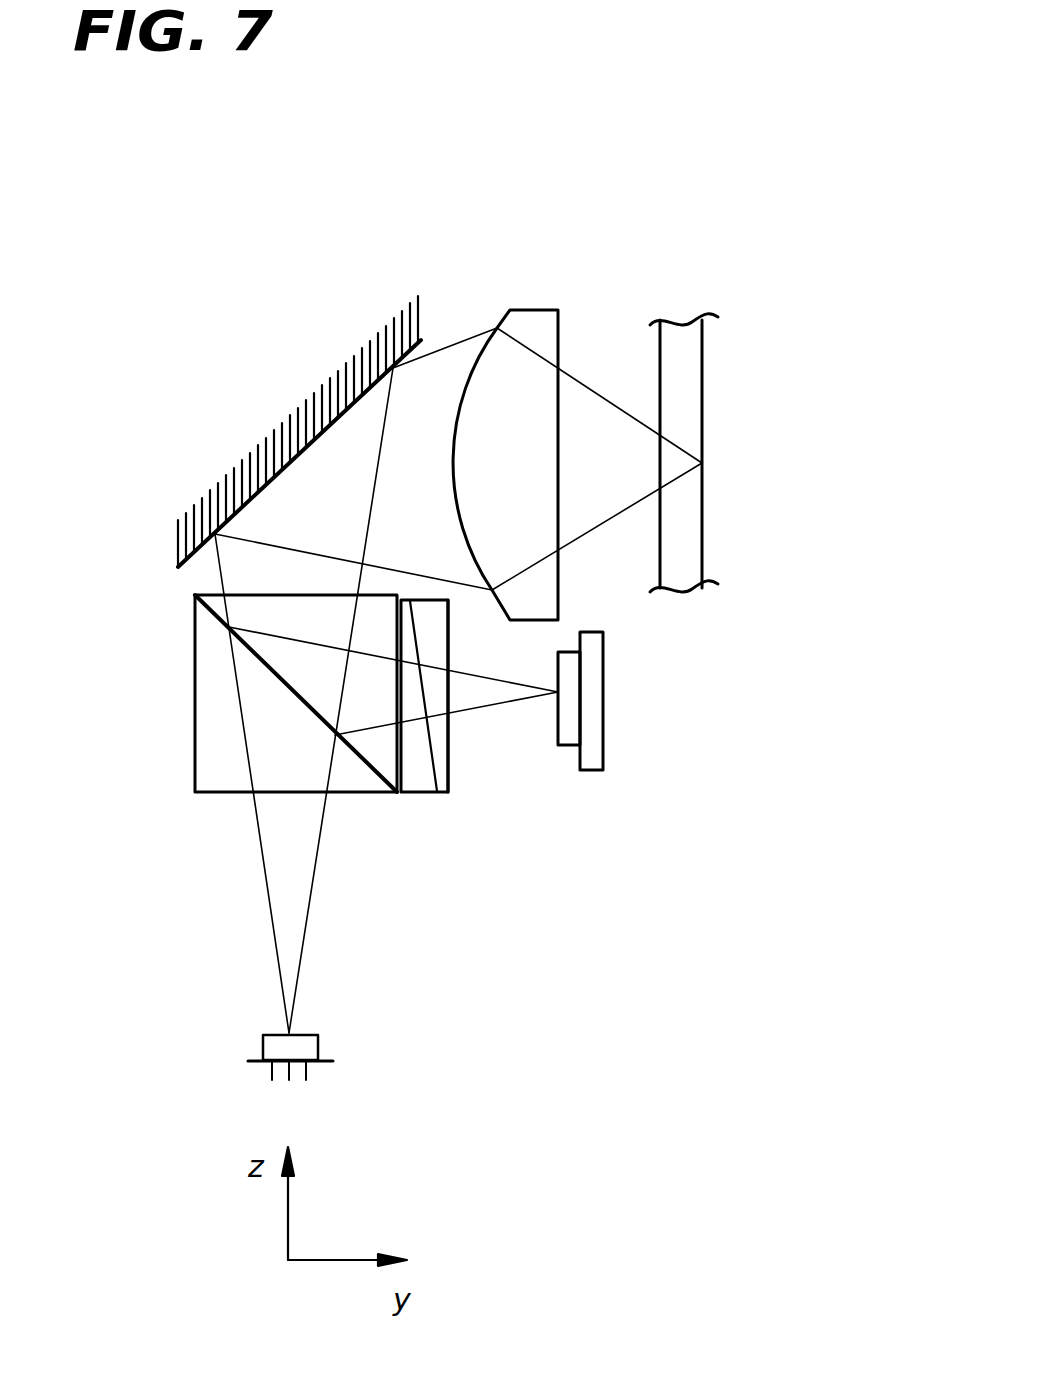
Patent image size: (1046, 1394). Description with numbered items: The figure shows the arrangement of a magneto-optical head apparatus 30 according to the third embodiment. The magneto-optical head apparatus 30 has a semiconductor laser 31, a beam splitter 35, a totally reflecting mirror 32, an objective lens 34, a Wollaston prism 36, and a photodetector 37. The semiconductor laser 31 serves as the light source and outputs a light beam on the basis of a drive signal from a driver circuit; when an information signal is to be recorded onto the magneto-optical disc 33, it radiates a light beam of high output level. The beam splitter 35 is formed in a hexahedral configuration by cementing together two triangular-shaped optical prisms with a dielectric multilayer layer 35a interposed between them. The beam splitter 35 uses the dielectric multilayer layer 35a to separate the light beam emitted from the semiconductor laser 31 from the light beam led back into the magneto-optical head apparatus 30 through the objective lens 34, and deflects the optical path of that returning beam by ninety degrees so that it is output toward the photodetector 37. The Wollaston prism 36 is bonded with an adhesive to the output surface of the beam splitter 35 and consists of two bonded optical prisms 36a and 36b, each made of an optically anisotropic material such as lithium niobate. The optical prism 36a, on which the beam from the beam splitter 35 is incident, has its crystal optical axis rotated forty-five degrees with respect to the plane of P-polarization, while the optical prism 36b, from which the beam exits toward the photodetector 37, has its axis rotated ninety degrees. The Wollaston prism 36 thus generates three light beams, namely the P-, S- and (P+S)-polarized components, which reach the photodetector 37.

The magneto-optical head apparatus 30 is at (685, 277).
The semiconductor laser 31 is at (318, 1052).
The totally reflecting mirror 32 is at (320, 397).
The magneto-optical disc 33 is at (685, 358).
The objective lens 34 is at (530, 308).
The beam splitter 35 is at (222, 778).
The dielectric multilayer layer 35a is at (268, 666).
The Wollaston prism 36 is at (441, 781).
The optical prism 36a is at (406, 794).
The optical prism 36b is at (448, 762).
The photodetector 37 is at (603, 745).